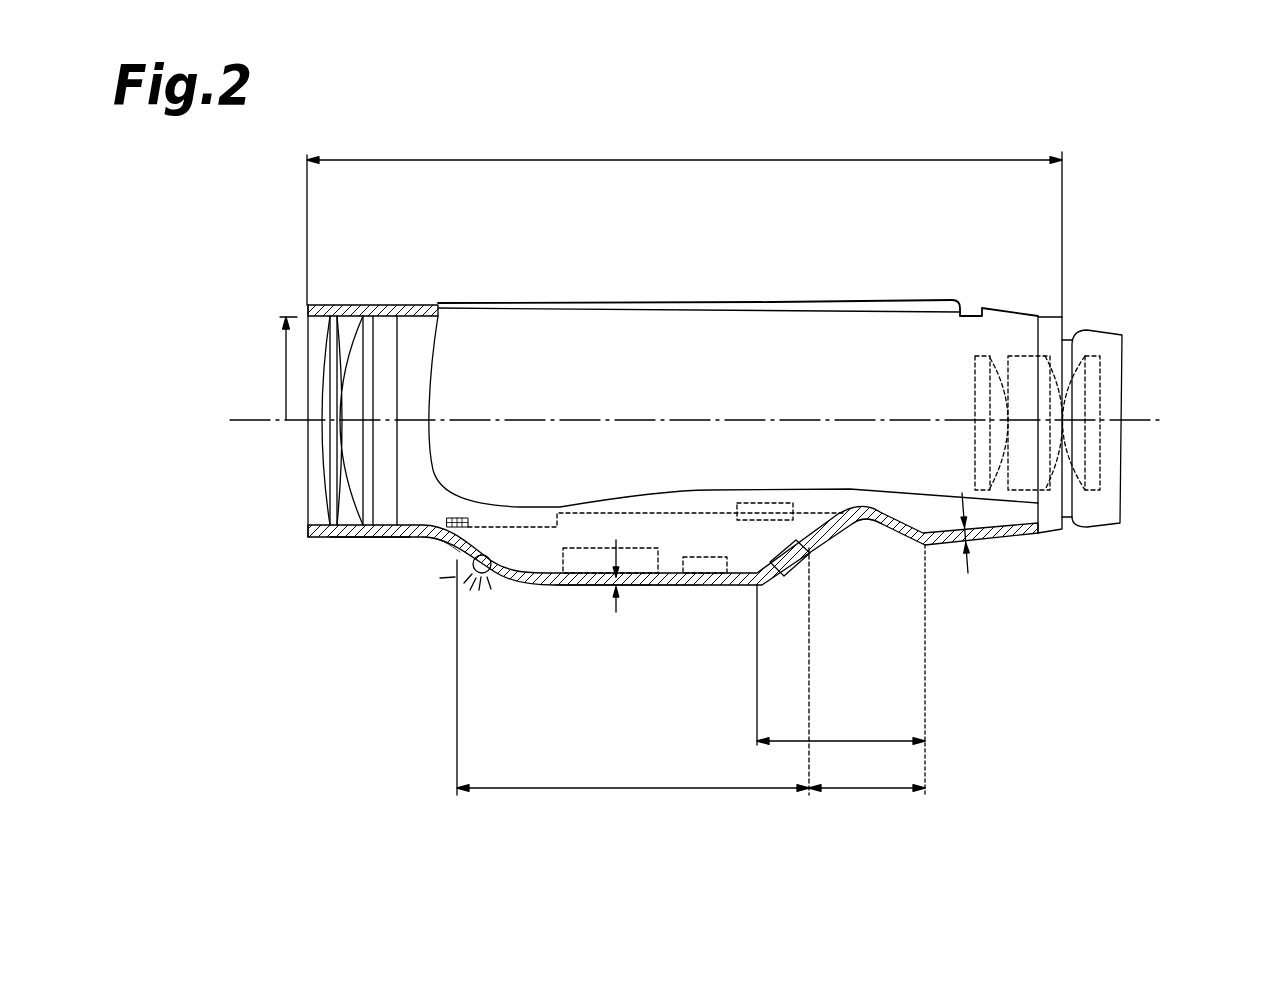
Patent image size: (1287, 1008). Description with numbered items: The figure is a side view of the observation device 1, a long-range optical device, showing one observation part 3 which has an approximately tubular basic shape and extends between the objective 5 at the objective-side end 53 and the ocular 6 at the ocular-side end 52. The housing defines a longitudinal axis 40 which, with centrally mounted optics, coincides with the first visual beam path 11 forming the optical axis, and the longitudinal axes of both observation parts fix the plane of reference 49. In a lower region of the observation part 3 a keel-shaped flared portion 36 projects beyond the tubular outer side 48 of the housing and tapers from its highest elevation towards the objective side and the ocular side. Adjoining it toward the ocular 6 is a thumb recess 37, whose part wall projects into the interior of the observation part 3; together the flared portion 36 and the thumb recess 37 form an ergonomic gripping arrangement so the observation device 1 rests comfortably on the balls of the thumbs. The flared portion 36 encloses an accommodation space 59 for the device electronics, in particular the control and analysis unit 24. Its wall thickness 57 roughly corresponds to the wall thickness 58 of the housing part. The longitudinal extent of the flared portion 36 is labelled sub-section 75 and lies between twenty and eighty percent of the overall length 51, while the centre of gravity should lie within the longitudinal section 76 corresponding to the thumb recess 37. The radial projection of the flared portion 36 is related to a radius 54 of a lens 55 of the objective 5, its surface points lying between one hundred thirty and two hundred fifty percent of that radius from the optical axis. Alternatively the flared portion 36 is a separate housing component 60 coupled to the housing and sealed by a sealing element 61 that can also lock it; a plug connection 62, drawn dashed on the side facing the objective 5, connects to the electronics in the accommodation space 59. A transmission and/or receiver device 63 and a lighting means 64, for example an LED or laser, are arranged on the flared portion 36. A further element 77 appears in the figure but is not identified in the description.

The observation device 1 is at (716, 399).
The observation part 3 is at (960, 233).
The objective 5 is at (282, 441).
The ocular 6 is at (1142, 535).
The first visual beam path 11 is at (698, 418).
The control and analysis unit 24 is at (661, 578).
The flared portion 36 is at (613, 641).
The thumb recess 37 is at (847, 543).
The longitudinal axis 40 is at (1150, 413).
The outer side 48 is at (358, 545).
The plane of reference 49 is at (253, 420).
The overall length 51 is at (662, 153).
The ocular-side end 52 is at (1147, 322).
The objective-side end 53 is at (597, 594).
The radius 54 is at (290, 352).
The lens 55 is at (333, 468).
The wall thickness 57 is at (618, 617).
The wall thickness 58 is at (968, 573).
The accommodation space 59 is at (687, 533).
The housing component 60 is at (584, 588).
The sealing element 61 is at (428, 537).
The plug connection 62 is at (457, 510).
The transmission and/or receiver device 63 is at (792, 563).
The lighting means 64 is at (488, 572).
The sub-section 75 is at (626, 796).
The longitudinal section 76 is at (858, 749).
The support surface 77 is at (557, 589).